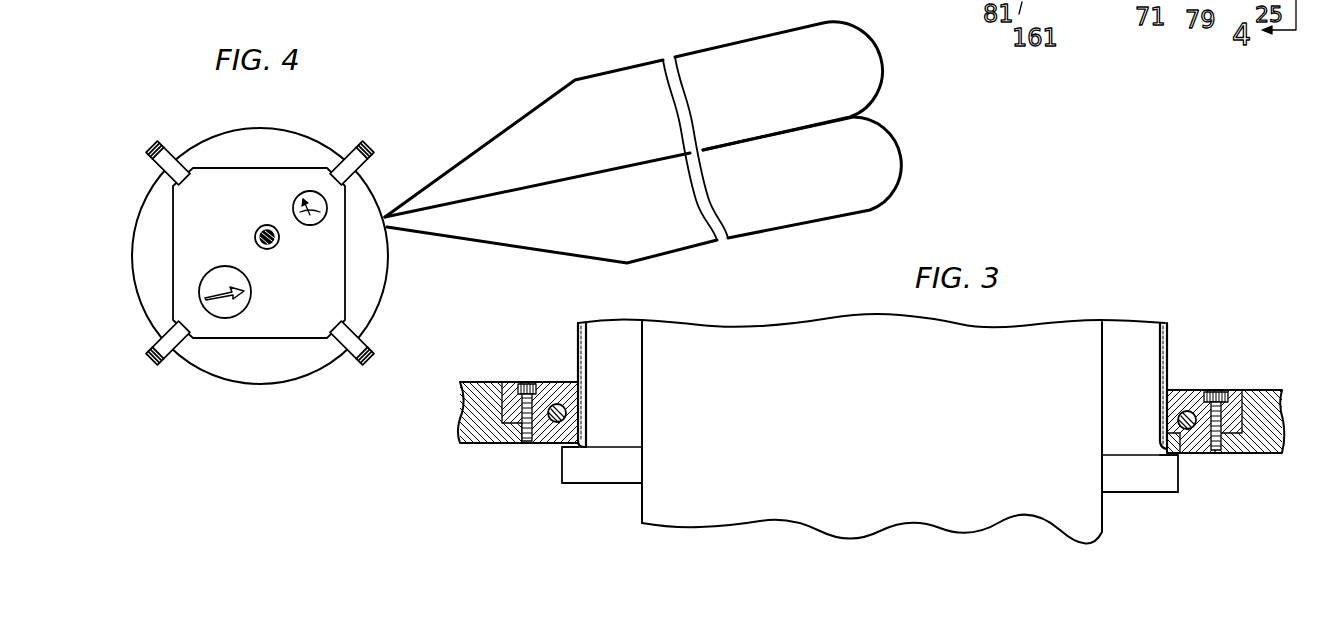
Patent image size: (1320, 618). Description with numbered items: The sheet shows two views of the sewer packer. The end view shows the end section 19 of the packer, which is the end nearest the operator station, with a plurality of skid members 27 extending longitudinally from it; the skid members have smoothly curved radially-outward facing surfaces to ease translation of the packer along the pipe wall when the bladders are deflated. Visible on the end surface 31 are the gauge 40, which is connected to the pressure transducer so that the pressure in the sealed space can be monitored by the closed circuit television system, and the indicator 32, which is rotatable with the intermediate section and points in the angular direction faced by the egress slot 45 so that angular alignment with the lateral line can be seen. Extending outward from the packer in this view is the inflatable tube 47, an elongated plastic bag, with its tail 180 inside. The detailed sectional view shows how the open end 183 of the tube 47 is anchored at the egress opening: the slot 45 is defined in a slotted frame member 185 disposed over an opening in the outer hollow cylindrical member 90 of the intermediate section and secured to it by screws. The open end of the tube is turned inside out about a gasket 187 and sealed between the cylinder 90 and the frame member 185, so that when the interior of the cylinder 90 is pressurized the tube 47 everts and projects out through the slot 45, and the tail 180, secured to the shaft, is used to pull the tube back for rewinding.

In FIG. 4, the end section 19 is at (134, 224).
In FIG. 4, the skid members 27 is at (152, 146).
In FIG. 4, the remote end surface 31 is at (370, 276).
In FIG. 4, the indicator 32 is at (234, 318).
In FIG. 4, the gauge 40 is at (311, 192).
In FIG. 4, the inflatable tube 47 is at (773, 234).
In FIG. 3, the inflatable tube 47 is at (1167, 339).
In FIG. 3, the egress slot 45 is at (582, 388).
In FIG. 3, the outer hollow cylindrical member 90 is at (1257, 390).
In FIG. 3, the tail 180 is at (1090, 504).
In FIG. 3, the open end 183 is at (612, 484).
In FIG. 3, the slotted frame member 185 is at (1188, 390).
In FIG. 3, the gasket 187 is at (548, 444).